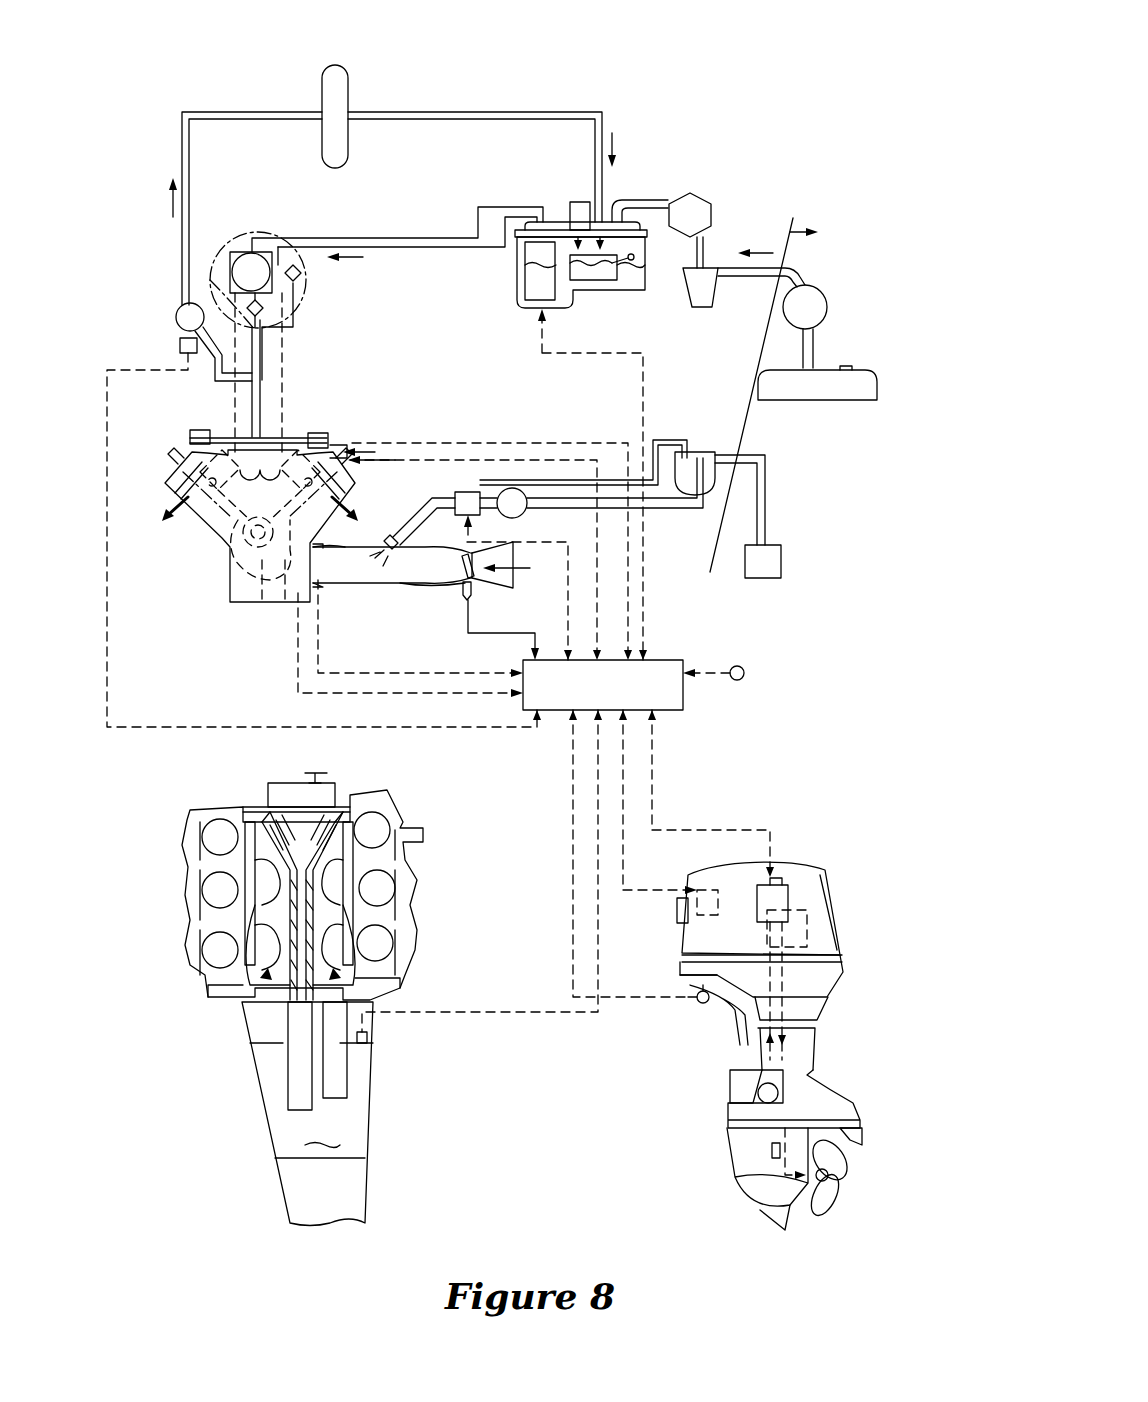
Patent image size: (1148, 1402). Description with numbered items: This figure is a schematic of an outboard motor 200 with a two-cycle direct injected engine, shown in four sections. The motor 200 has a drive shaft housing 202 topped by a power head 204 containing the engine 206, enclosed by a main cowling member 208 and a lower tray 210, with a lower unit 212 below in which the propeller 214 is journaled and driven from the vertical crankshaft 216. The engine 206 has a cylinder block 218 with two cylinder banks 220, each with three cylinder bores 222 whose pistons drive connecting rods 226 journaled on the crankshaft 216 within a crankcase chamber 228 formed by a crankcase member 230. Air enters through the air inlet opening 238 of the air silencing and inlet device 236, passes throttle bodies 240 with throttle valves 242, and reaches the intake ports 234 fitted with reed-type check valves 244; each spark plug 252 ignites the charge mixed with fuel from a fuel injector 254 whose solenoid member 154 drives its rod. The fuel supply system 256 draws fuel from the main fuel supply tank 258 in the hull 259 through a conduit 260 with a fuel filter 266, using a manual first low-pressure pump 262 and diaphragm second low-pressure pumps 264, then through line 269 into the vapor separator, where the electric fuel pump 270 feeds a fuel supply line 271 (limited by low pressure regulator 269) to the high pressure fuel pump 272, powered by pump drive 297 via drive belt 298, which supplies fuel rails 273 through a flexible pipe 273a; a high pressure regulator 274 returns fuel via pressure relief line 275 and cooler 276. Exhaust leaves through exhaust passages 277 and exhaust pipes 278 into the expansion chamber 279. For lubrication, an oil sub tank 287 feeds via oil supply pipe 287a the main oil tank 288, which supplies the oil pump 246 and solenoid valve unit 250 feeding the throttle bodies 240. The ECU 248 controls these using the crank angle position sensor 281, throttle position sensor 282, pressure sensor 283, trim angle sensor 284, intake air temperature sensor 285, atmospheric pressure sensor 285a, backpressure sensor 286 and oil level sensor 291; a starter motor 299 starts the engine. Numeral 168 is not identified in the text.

The solenoid member 154 is at (345, 447).
The oil tank 168 is at (508, 278).
The outboard motor 200 is at (825, 835).
The drive shaft housing 202 is at (370, 1150).
The power head 204 is at (860, 905).
The engine 206 is at (150, 660).
The main cowling member 208 is at (842, 958).
The lower tray 210 is at (805, 995).
The lower unit 212 is at (728, 1155).
The propeller 214 is at (830, 1210).
The crankshaft 216 is at (265, 600).
The cylinder block 218 is at (200, 545).
The cylinder banks 220 is at (215, 548).
The cylinder bores 222 is at (308, 885).
The connecting rods 226 is at (260, 525).
The crankcase chamber 228 is at (250, 600).
The crankcase member 230 is at (240, 600).
The intake port 234 is at (415, 583).
The air silencing and inlet device 236 is at (505, 545).
The air inlet opening 238 is at (505, 578).
The throttle bodies 240 is at (445, 525).
The throttle valve 242 is at (450, 590).
The reed-type check valves 244 is at (205, 548).
The oil pump 246 is at (515, 488).
The ECU 248 is at (683, 705).
The solenoid valve unit 250 is at (465, 492).
The spark plug 252 is at (350, 448).
The fuel injector 254 is at (190, 436).
The fuel supply system 256 is at (605, 80).
The main fuel supply tank 258 is at (818, 400).
The hull 259 is at (787, 395).
The conduit 260 is at (815, 350).
The first low-pressure pump 262 is at (826, 307).
The second low-pressure pumps 264 is at (712, 210).
The fuel filter 266 is at (710, 290).
The line / low pressure regulator 269 is at (578, 202).
The high pressure electric fuel pump 270 is at (560, 296).
The fuel supply line 271 is at (370, 238).
The high pressure fuel pump 272 is at (246, 228).
The fuel rails 273 is at (198, 430).
The flexible pipe 273a is at (312, 781).
The high pressure regulator 274 is at (178, 315).
The pressure relief line 275 is at (487, 112).
The fuel heat exchanger or cooler 276 is at (348, 90).
The exhaust passage 277 is at (262, 840).
The exhaust pipes 278 is at (287, 1075).
The expansion chamber 279 is at (319, 1133).
The crank angle position sensor 281 is at (300, 600).
The throttle position sensor 282 is at (472, 595).
The pressure sensor 283 is at (180, 345).
The trim angle sensor 284 is at (712, 1003).
The intake air temperature sensor 285 is at (320, 590).
The atmospheric pressure sensor 285a is at (742, 668).
The backpressure sensor 286 is at (368, 1040).
The oil sub tank 287 is at (781, 560).
The oil supply pipe 287a is at (766, 500).
The main oil tank 288 is at (698, 452).
The oil level sensor 291 is at (762, 878).
The pump drive 297 is at (370, 795).
The drive belt 298 is at (210, 280).
The starter motor 299 is at (705, 890).